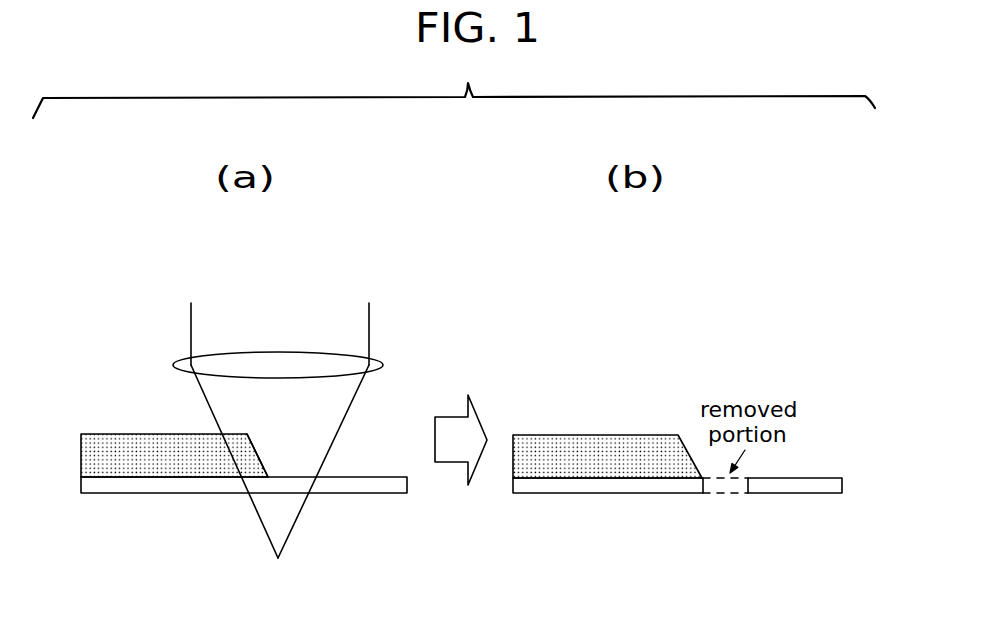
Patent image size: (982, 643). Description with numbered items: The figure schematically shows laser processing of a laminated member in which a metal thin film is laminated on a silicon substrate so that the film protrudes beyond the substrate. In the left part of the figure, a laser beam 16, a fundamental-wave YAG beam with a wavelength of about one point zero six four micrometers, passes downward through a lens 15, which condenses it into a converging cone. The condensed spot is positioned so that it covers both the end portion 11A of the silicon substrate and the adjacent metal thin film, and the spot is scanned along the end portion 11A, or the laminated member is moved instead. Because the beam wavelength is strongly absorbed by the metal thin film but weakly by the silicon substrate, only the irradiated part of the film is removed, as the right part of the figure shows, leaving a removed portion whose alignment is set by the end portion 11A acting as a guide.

The end portion of the silicon substrate 11A is at (255, 447).
The lens 15 is at (382, 362).
The laser beam 16 is at (338, 423).